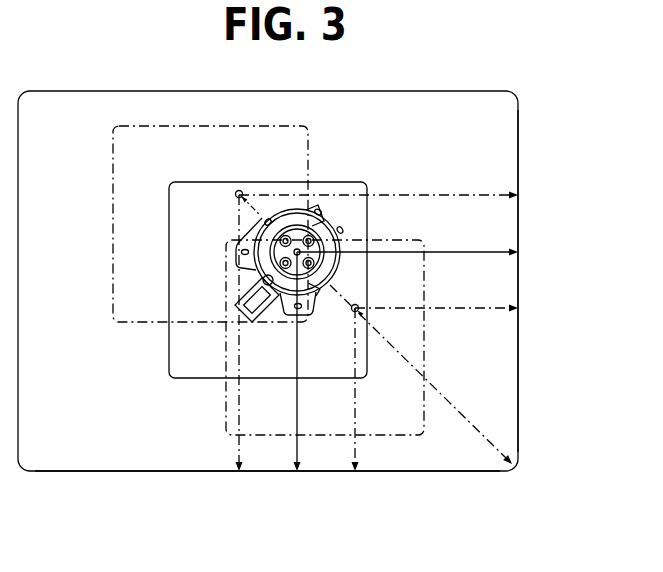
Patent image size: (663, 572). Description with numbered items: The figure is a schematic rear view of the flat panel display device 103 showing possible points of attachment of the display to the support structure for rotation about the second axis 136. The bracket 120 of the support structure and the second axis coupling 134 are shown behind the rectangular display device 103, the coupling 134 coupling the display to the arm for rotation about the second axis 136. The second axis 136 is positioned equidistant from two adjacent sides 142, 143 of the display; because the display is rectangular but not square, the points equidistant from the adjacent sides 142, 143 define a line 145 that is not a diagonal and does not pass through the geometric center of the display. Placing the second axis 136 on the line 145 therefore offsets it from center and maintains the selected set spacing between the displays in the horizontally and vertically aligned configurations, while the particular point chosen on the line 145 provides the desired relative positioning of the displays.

The display device 103 is at (462, 113).
The bracket 120 is at (185, 355).
The second axis coupling 134 is at (266, 199).
The second axis 136 is at (327, 233).
The adjacent side 142 is at (463, 473).
The adjacent side 143 is at (518, 285).
The line 145 is at (491, 433).